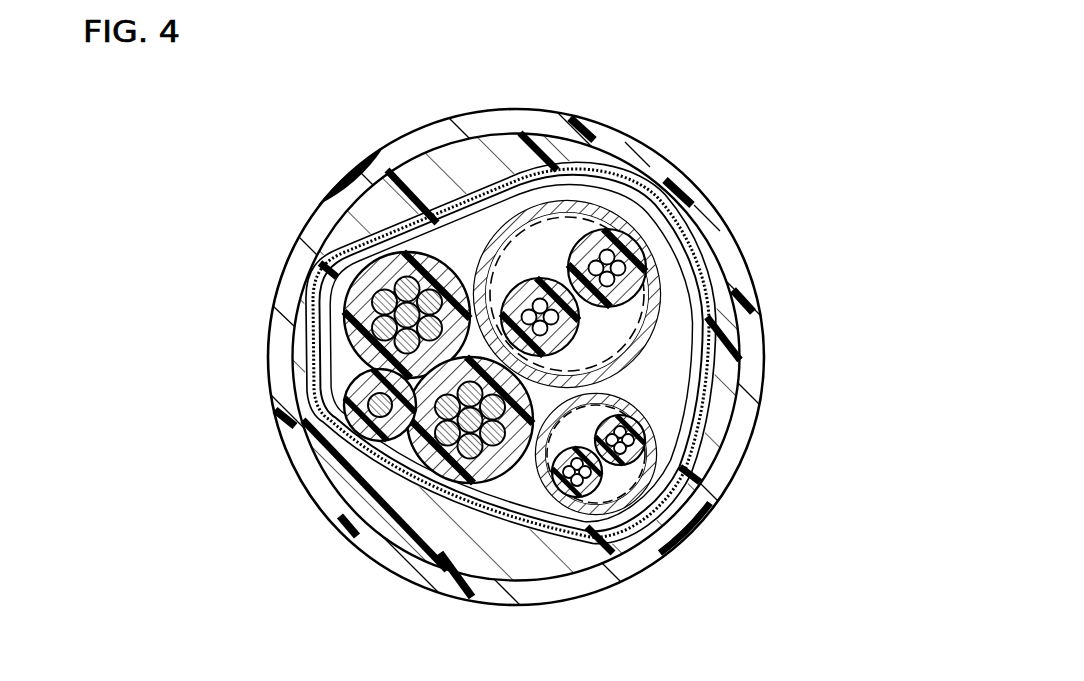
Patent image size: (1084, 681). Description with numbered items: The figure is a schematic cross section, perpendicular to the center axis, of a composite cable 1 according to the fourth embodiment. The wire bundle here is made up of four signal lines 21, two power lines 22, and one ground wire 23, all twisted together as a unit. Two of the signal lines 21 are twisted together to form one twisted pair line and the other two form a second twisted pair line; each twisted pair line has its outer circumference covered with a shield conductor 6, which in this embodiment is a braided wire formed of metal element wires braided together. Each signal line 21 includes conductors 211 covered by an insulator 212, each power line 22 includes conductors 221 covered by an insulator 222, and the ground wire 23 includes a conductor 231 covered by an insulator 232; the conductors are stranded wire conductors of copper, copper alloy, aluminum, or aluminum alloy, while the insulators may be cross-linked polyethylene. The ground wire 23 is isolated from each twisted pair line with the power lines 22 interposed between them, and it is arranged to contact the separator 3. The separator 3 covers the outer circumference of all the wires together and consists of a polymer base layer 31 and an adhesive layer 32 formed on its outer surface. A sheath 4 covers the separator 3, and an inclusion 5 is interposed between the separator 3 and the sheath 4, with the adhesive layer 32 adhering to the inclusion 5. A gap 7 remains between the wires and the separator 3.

The composite cable 1 is at (362, 135).
The sheath 4 is at (452, 130).
The inclusion 5 is at (490, 150).
The gap 7 is at (387, 180).
The separator 3 is at (538, 290).
The base layer 31 is at (668, 198).
The adhesive layer 32 is at (655, 192).
The power line 22 is at (320, 424).
The conductor 221 is at (350, 355).
The insulator 222 is at (450, 243).
The ground wire 23 is at (268, 503).
The conductor 231 is at (400, 444).
The insulator 232 is at (365, 400).
The signal line 21 is at (690, 422).
The conductor 211 is at (632, 246).
The insulator 212 is at (652, 283).
The shield conductor 6 is at (658, 298).